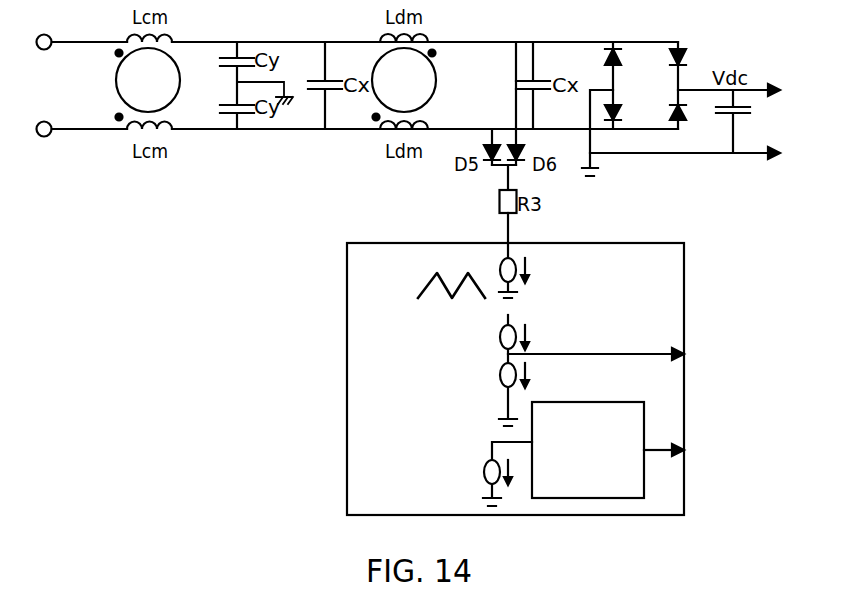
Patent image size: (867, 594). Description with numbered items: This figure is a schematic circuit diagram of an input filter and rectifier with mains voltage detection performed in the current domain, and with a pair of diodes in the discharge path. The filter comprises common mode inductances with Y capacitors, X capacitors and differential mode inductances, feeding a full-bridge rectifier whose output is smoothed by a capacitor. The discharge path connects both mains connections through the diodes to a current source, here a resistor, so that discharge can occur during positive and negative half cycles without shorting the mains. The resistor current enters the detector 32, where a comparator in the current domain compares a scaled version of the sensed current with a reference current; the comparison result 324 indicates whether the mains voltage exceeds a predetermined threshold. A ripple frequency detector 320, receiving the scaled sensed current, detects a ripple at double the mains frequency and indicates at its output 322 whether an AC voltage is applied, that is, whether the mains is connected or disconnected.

The detector 32 is at (393, 281).
The ripple frequency detector 320 is at (566, 464).
The ripple detector output 322 is at (691, 451).
The comparison result 324 is at (623, 355).